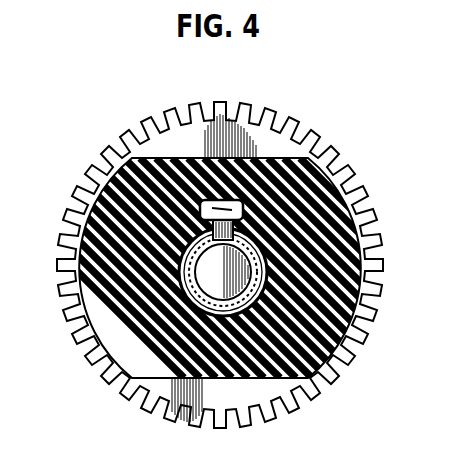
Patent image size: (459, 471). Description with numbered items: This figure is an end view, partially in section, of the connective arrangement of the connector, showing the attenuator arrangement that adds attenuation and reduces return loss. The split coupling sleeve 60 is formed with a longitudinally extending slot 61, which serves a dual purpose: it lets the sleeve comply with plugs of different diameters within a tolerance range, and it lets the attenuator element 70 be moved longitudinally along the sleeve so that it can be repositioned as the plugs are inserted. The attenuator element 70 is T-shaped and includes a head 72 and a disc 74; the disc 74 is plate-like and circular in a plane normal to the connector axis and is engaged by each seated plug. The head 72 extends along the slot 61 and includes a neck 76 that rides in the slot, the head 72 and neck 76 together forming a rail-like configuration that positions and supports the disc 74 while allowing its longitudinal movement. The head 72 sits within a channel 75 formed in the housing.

The sleeve 60 is at (268, 275).
The slot 61 is at (185, 265).
The attenuator element 70 is at (222, 200).
The head 72 is at (234, 205).
The disc 74 is at (228, 250).
The channel 75 is at (217, 200).
The neck 76 is at (215, 285).